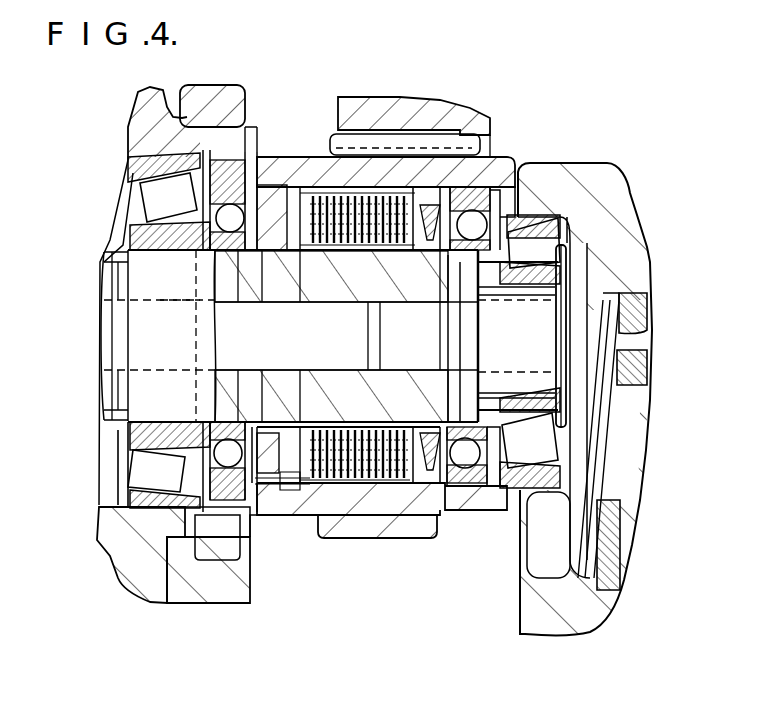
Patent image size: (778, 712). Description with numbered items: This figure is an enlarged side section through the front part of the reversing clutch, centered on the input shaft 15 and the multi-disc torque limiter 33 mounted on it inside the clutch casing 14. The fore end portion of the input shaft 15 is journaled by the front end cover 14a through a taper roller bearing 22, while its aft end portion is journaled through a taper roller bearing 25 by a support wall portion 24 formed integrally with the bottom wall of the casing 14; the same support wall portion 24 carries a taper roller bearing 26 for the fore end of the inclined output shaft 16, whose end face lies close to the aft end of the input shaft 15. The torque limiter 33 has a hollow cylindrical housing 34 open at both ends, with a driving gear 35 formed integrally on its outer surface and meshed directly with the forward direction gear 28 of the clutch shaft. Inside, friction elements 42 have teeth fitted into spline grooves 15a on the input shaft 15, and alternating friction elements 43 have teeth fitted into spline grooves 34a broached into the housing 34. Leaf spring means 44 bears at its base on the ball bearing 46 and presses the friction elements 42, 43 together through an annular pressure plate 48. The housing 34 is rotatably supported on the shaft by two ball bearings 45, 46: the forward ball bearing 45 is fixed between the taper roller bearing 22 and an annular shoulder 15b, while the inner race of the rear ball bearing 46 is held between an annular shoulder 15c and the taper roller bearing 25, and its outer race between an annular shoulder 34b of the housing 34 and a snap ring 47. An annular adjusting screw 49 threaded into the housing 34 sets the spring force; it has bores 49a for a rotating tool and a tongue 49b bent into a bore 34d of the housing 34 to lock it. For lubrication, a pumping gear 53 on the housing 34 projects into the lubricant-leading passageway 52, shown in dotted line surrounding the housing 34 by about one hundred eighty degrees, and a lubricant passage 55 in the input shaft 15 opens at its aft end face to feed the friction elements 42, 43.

The clutch casing 14 is at (238, 590).
The front end cover 14a is at (147, 553).
The input shaft 15 is at (118, 250).
The spline grooves 15a is at (412, 436).
The annular shoulder 15b is at (238, 262).
The annular shoulder 15c is at (490, 370).
The output shaft 16 is at (530, 540).
The taper roller bearing 22 is at (128, 163).
The support wall portion 24 is at (560, 614).
The taper roller bearing 25 is at (545, 245).
The taper roller bearing 26 is at (608, 540).
The forward direction gear 28 is at (358, 117).
The torque limiter 33 is at (497, 127).
The cylindrical housing 34 is at (277, 515).
The spline grooves 34a is at (428, 195).
The annular shoulder 34b is at (449, 497).
The bore 34d is at (200, 203).
The driving gear 35 is at (375, 540).
The friction elements 42 is at (366, 252).
The friction elements 43 is at (387, 492).
The leaf spring means 44 is at (493, 153).
The ball bearing 45 is at (181, 433).
The ball bearing 46 is at (468, 480).
The snap ring 47 is at (502, 200).
The annular pressure plate 48 is at (404, 252).
The adjusting screw 49 is at (287, 252).
The bores 49a is at (277, 423).
The tongue 49b is at (280, 195).
The lubricant-leading passageway 52 is at (200, 342).
The pumping gear 53 is at (208, 527).
The lubricant passage 55 is at (578, 258).